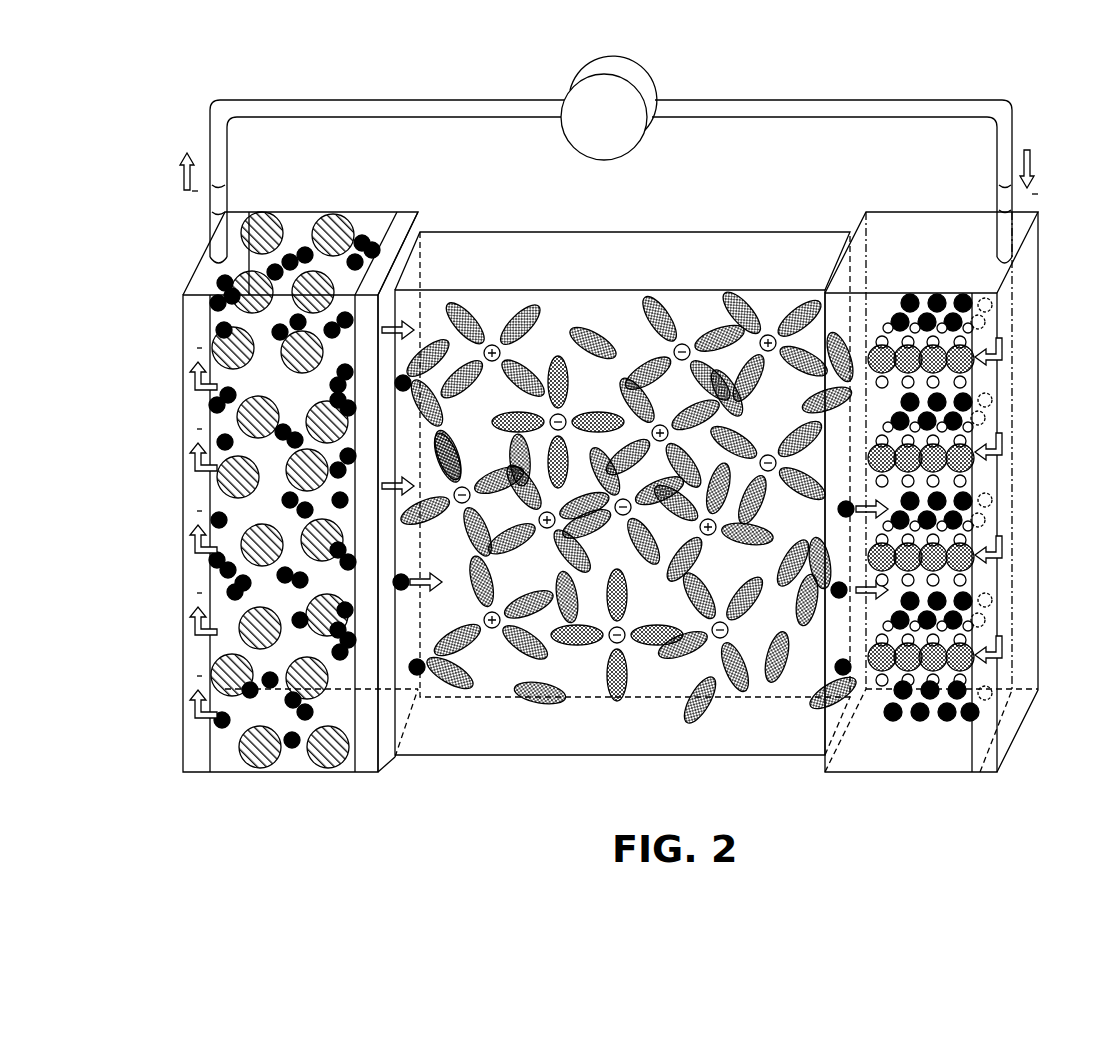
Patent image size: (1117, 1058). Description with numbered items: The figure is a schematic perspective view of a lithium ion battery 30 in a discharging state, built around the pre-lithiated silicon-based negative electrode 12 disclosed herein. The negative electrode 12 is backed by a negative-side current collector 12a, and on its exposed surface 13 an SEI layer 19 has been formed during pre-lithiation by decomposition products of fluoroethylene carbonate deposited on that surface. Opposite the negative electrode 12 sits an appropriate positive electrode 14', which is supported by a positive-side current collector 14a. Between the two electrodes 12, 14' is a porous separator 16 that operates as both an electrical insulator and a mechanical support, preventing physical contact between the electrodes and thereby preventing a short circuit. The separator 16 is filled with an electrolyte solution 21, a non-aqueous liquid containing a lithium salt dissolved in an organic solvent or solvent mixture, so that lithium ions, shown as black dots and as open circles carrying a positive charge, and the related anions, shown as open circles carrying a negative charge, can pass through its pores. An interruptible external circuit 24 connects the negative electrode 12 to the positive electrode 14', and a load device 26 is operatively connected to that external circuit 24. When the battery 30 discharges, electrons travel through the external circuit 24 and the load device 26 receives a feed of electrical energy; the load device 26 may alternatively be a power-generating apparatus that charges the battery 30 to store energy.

The silicon-based negative electrode 12 is at (331, 196).
The negative-side current collector 12a is at (195, 737).
The exposed surface 13 is at (420, 242).
The positive electrode 14' is at (965, 457).
The positive-side current collector 14a is at (990, 754).
The porous separator 16 is at (684, 266).
The SEI layer 19 is at (368, 762).
The electrolyte solution 21 is at (517, 728).
The external circuit 24 is at (403, 100).
The load device 26 is at (612, 57).
The lithium ion battery 30 is at (1034, 110).